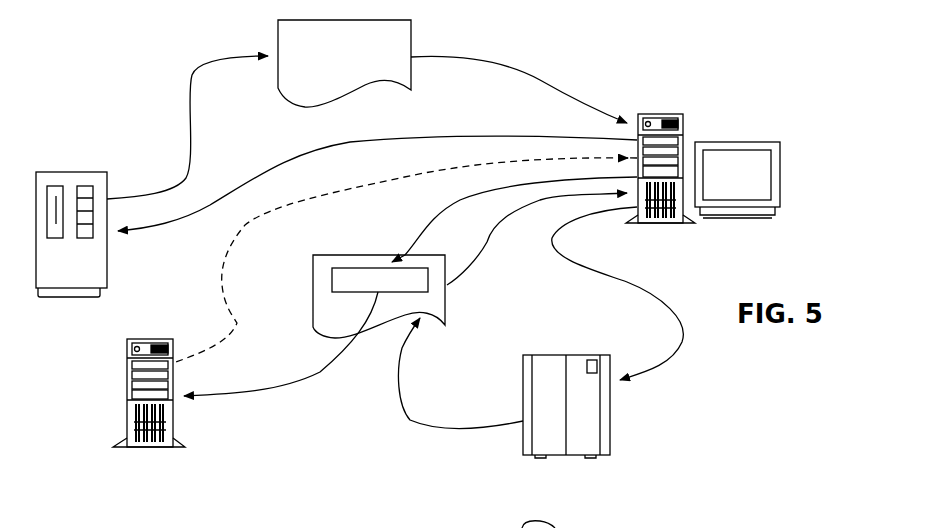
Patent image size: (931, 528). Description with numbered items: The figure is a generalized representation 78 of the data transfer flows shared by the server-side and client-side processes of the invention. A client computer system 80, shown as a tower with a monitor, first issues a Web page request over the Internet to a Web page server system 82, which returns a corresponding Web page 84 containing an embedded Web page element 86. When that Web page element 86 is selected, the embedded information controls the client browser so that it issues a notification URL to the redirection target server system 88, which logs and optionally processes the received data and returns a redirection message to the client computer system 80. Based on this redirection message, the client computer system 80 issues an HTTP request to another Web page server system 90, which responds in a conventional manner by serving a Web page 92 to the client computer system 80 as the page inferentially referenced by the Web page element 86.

The representation 78 is at (703, 387).
The client computer system 80 is at (730, 222).
The Web page server system 82 is at (610, 438).
The Web page 84 is at (410, 255).
The Web page element 86 is at (428, 290).
The redirection target server system 88 is at (173, 430).
The Web page server system 90 is at (107, 277).
The Web page 92 is at (342, 89).